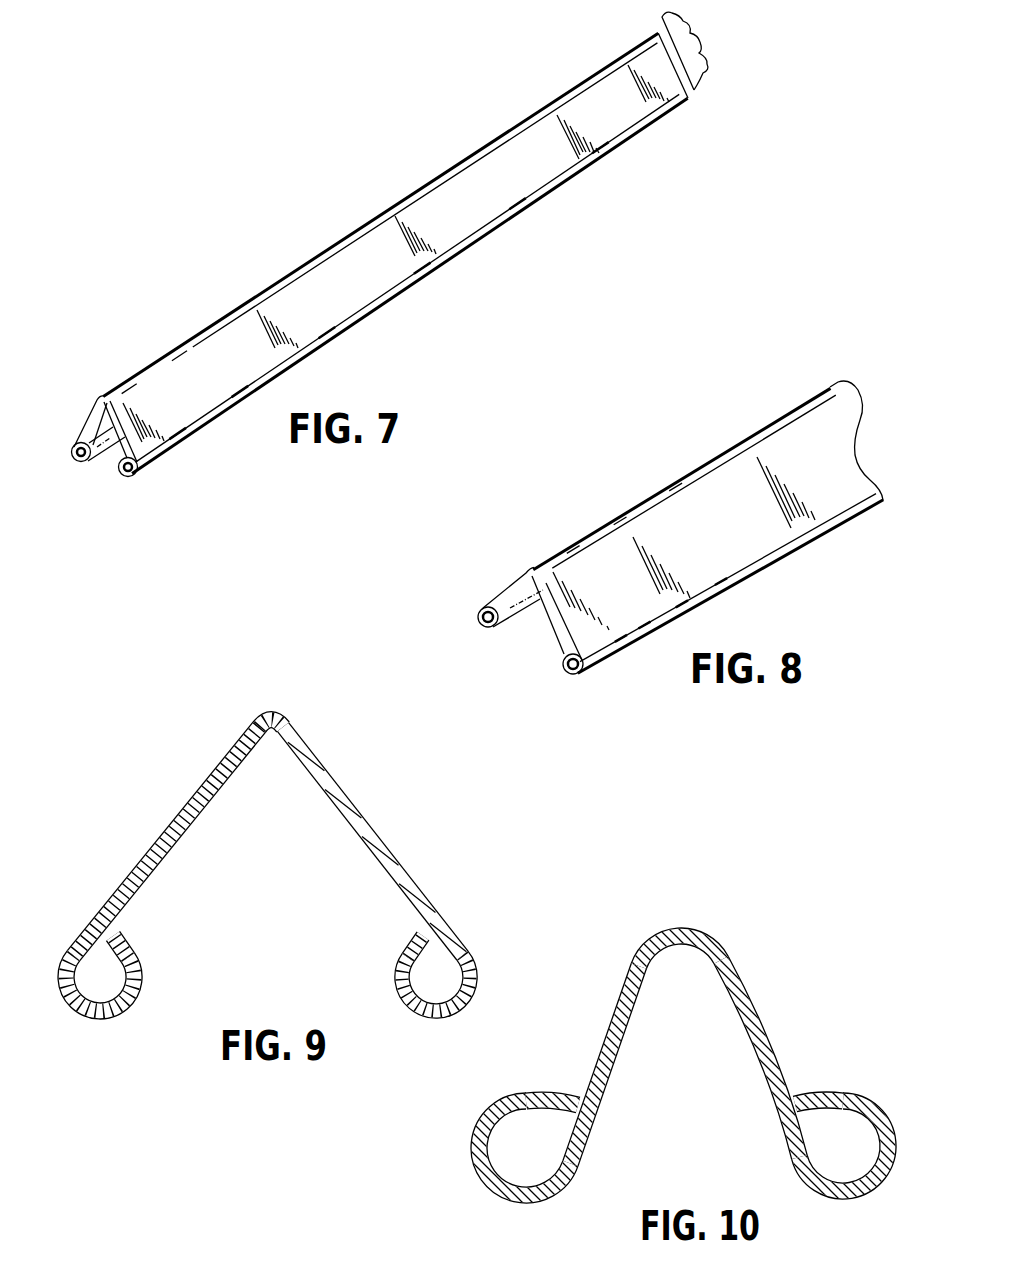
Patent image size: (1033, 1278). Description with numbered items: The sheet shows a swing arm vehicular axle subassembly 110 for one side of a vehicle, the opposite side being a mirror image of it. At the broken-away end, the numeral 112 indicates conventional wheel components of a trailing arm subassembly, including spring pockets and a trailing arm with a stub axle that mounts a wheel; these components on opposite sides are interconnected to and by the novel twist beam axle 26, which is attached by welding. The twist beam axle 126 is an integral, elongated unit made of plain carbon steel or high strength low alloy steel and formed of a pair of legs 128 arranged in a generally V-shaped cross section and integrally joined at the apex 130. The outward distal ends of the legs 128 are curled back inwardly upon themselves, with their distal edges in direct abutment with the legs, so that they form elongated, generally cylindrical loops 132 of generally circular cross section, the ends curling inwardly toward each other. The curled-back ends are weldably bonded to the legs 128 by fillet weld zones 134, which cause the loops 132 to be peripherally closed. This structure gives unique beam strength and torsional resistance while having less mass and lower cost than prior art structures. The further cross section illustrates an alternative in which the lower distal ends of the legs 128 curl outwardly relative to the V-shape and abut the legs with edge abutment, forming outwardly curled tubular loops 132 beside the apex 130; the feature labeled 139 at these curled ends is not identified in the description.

In FIG. 7, the vehicular axle subassembly 110 is at (414, 244).
In FIG. 7, the wheel components 112 is at (696, 72).
In FIG. 7, the twist beam axle 126 is at (378, 317).
In FIG. 10, the twist beam axle 126 is at (706, 1060).
In FIG. 9, the legs 128 is at (165, 850).
In FIG. 10, the legs 128 is at (648, 1082).
In FIG. 8, the apex 130 is at (708, 468).
In FIG. 9, the apex 130 is at (253, 719).
In FIG. 10, the apex 130 is at (713, 933).
In FIG. 8, the loops 132 is at (562, 661).
In FIG. 9, the loops 132 is at (163, 963).
In FIG. 10, the loops 132 is at (537, 1095).
In FIG. 8, the fillet weld zones 134 is at (530, 600).
In FIG. 9, the fillet weld zones 134 is at (116, 928).
In FIG. 10, the end tab 139 is at (578, 1097).
In FIG. 9, the twist beam axle 26 is at (278, 859).